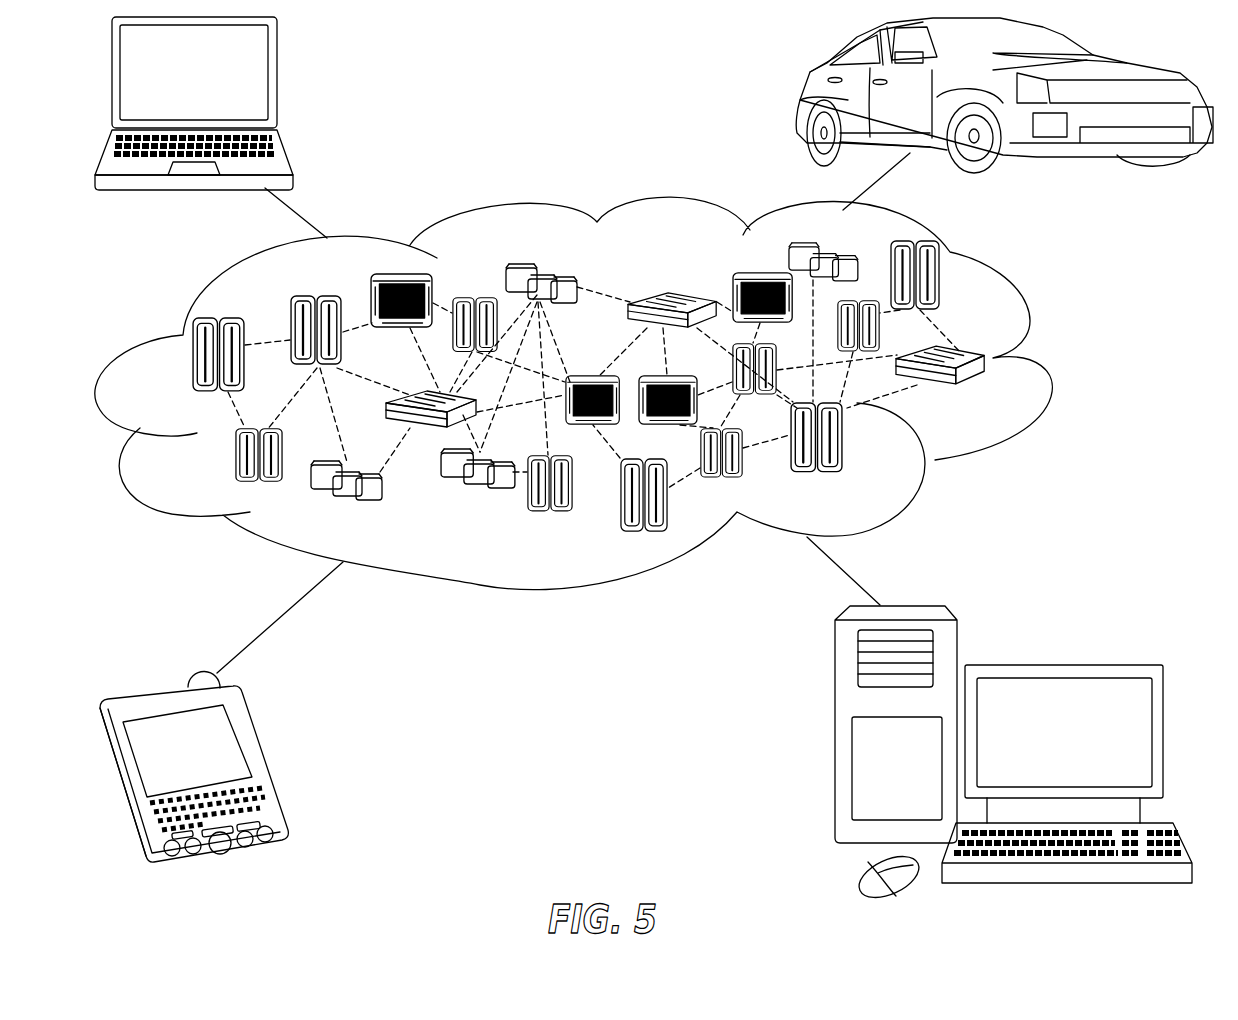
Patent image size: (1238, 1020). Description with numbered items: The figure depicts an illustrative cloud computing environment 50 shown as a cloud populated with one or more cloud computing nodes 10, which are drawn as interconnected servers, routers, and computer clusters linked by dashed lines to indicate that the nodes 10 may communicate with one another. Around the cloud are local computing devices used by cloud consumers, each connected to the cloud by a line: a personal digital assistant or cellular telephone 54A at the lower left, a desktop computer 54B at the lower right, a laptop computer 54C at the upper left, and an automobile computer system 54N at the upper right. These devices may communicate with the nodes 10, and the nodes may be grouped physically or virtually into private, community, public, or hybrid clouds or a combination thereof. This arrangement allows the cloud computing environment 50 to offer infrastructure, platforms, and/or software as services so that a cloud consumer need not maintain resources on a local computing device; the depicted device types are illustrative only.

The cloud computing environment 50 is at (1057, 368).
The cloud computing nodes 10 is at (1000, 397).
The personal digital assistant or cellular telephone 54A is at (263, 765).
The desktop computer 54B is at (1062, 665).
The laptop computer 54C is at (278, 80).
The automobile computer system 54N is at (800, 98).